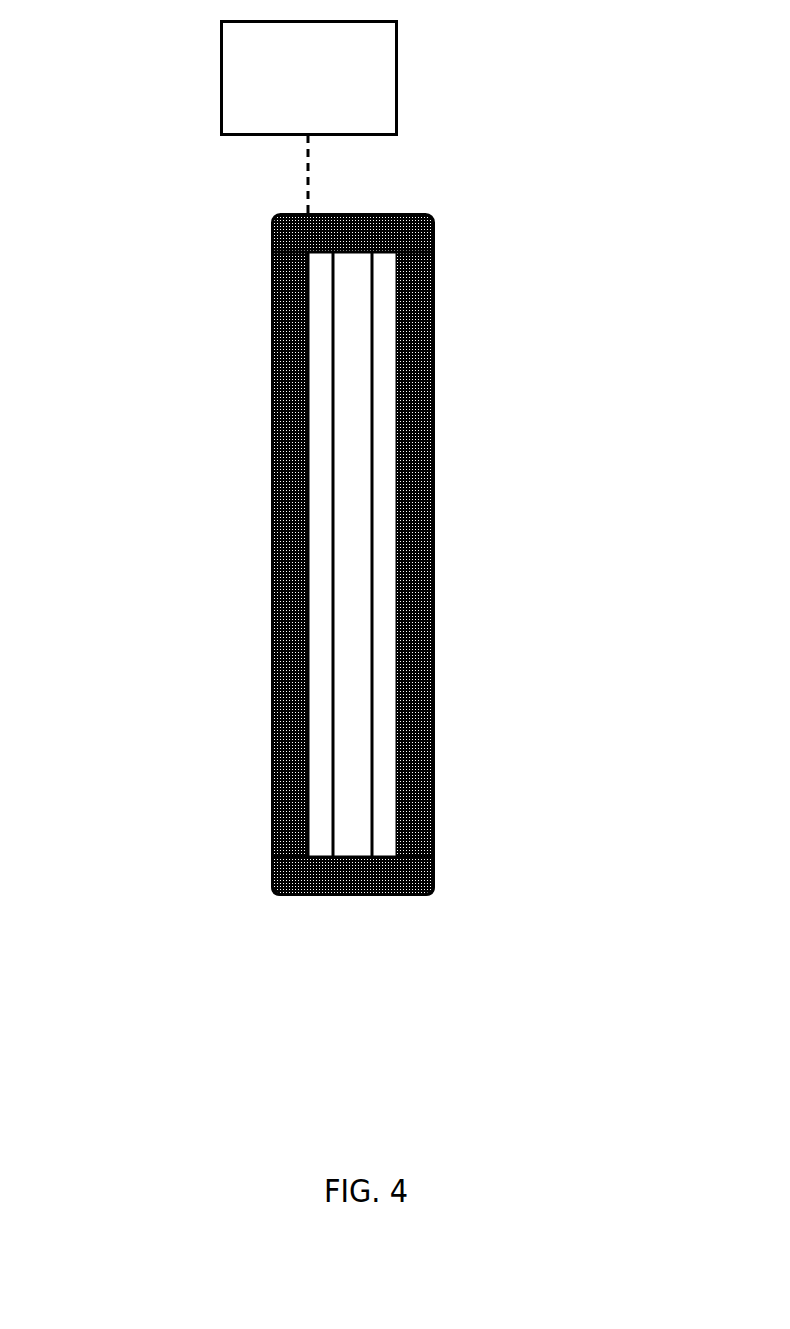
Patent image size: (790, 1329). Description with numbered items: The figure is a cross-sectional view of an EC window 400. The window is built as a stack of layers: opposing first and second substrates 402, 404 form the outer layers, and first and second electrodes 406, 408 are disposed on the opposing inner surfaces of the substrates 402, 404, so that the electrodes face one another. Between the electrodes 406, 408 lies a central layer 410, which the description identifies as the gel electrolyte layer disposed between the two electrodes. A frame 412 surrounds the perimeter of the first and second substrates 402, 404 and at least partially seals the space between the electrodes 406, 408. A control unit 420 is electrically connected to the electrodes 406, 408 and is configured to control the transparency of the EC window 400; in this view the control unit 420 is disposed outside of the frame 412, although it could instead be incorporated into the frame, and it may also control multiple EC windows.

The EC window 400 is at (372, 564).
The first substrate 402 is at (270, 554).
The second substrate 404 is at (433, 543).
The first electrode 406 is at (308, 627).
The second electrode 408 is at (398, 607).
The core layer 410 is at (333, 553).
The frame 412 is at (270, 877).
The control unit 420 is at (334, 95).